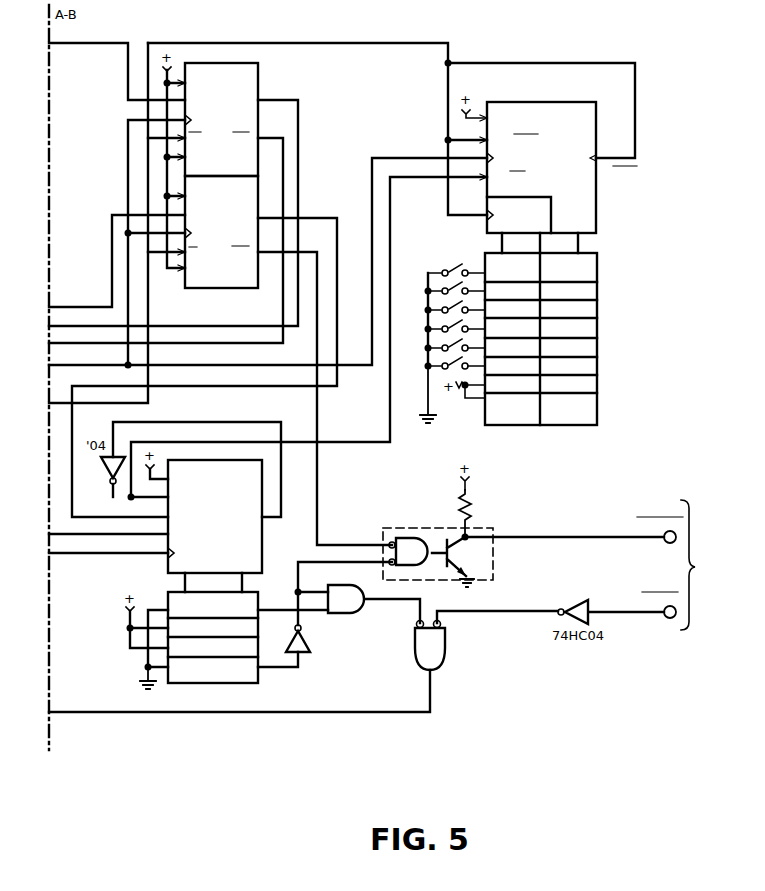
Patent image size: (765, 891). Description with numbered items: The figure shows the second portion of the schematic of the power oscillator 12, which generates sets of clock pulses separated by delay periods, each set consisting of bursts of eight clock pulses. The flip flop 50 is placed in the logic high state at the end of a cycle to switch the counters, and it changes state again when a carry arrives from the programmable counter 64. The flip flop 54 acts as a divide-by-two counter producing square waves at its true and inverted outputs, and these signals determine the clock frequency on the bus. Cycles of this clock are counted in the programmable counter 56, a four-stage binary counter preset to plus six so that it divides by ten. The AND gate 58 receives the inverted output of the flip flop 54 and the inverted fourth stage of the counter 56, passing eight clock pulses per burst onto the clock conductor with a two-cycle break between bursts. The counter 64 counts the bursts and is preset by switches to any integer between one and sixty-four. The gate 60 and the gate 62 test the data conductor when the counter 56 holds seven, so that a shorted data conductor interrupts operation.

The power oscillator 12 is at (620, 740).
The flip flop 50 is at (258, 66).
The flip flop 54 is at (240, 289).
The programmable counter 56 is at (262, 551).
The AND gate 58 is at (412, 568).
The gate 60 is at (347, 613).
The gate 62 is at (440, 667).
The programmable counter 64 is at (596, 210).